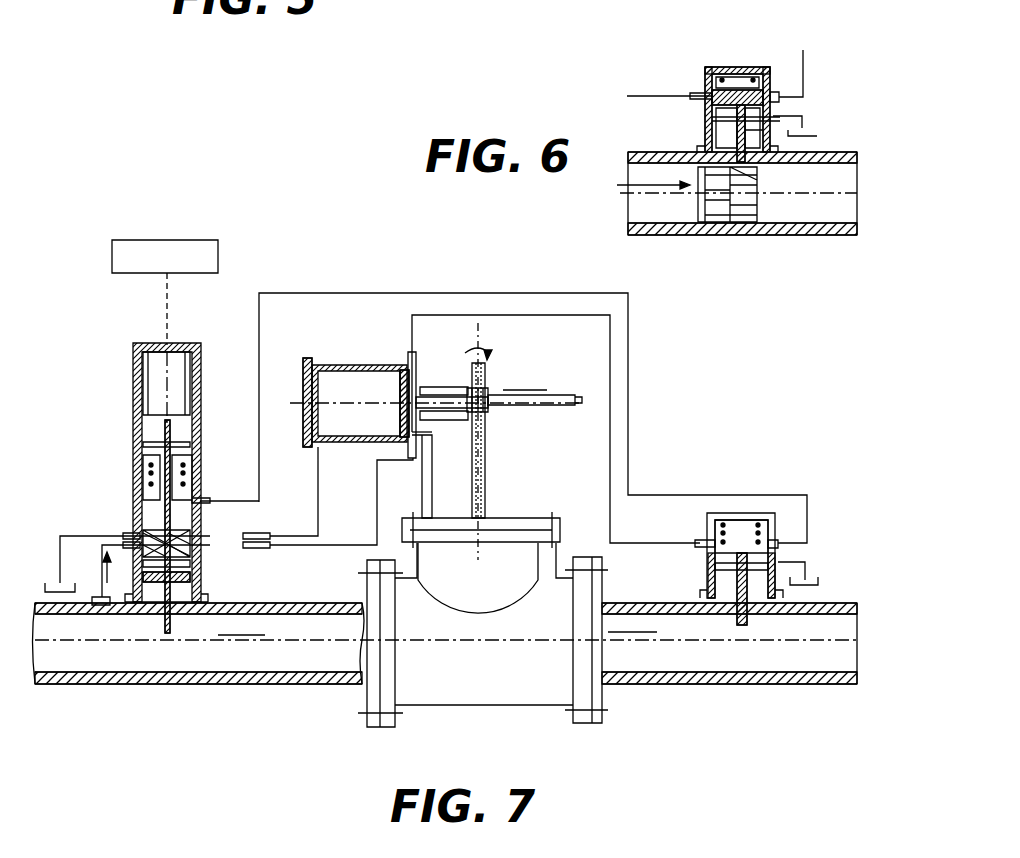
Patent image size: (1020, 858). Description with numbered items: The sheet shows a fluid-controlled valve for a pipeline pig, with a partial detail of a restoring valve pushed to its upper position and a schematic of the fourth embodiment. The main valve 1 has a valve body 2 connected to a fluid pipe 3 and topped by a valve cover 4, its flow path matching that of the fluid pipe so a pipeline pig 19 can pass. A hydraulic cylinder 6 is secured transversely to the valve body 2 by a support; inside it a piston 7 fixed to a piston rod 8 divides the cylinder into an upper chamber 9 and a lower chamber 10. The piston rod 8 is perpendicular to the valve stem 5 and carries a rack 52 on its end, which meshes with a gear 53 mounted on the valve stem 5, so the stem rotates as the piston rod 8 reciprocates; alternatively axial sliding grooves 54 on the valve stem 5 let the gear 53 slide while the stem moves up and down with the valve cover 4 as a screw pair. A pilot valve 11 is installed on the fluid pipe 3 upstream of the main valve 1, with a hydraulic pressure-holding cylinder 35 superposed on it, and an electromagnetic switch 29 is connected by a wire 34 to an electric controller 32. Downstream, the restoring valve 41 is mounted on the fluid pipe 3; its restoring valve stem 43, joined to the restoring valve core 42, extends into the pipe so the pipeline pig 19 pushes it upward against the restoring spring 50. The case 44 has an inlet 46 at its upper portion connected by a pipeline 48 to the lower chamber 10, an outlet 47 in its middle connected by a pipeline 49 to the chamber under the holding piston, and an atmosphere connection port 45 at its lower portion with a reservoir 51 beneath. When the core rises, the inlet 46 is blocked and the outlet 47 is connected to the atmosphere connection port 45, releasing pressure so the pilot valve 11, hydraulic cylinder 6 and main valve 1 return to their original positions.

In FIG. 7, the main valve 1 is at (457, 680).
In FIG. 7, the valve body 2 is at (555, 562).
In FIG. 6, the fluid pipe 3 is at (818, 214).
In FIG. 7, the fluid pipe 3 is at (686, 656).
In FIG. 7, the valve cover 4 is at (540, 514).
In FIG. 7, the valve stem 5 is at (487, 502).
In FIG. 7, the hydraulic cylinder 6 is at (303, 390).
In FIG. 7, the piston 7 is at (400, 412).
In FIG. 7, the piston rod 8 is at (433, 403).
In FIG. 7, the upper chamber 9 is at (345, 378).
In FIG. 7, the lower chamber 10 is at (402, 372).
In FIG. 7, the pilot valve 11 is at (136, 519).
In FIG. 6, the pipeline pig 19 is at (715, 200).
In FIG. 7, the electromagnetic switch 29 is at (173, 392).
In FIG. 7, the electric controller 32 is at (218, 252).
In FIG. 7, the wire 34 is at (170, 330).
In FIG. 7, the hydraulic pressure-holding cylinder 35 is at (199, 463).
In FIG. 6, the restoring valve 41 is at (703, 133).
In FIG. 6, the restoring valve core 42 is at (705, 112).
In FIG. 6, the restoring valve stem 43 is at (743, 143).
In FIG. 6, the case 44 is at (752, 78).
In FIG. 6, the atmosphere connection port 45 is at (783, 135).
In FIG. 6, the inlet 46 is at (706, 92).
In FIG. 6, the outlet 47 is at (800, 105).
In FIG. 6, the pipeline 48 is at (655, 96).
In FIG. 6, the pipeline 49 is at (806, 72).
In FIG. 6, the restoring spring 50 is at (728, 82).
In FIG. 6, the reservoir 51 is at (820, 134).
In FIG. 7, the rack 52 is at (563, 410).
In FIG. 7, the gear 53 is at (488, 410).
In FIG. 7, the axial sliding grooves 54 is at (485, 462).